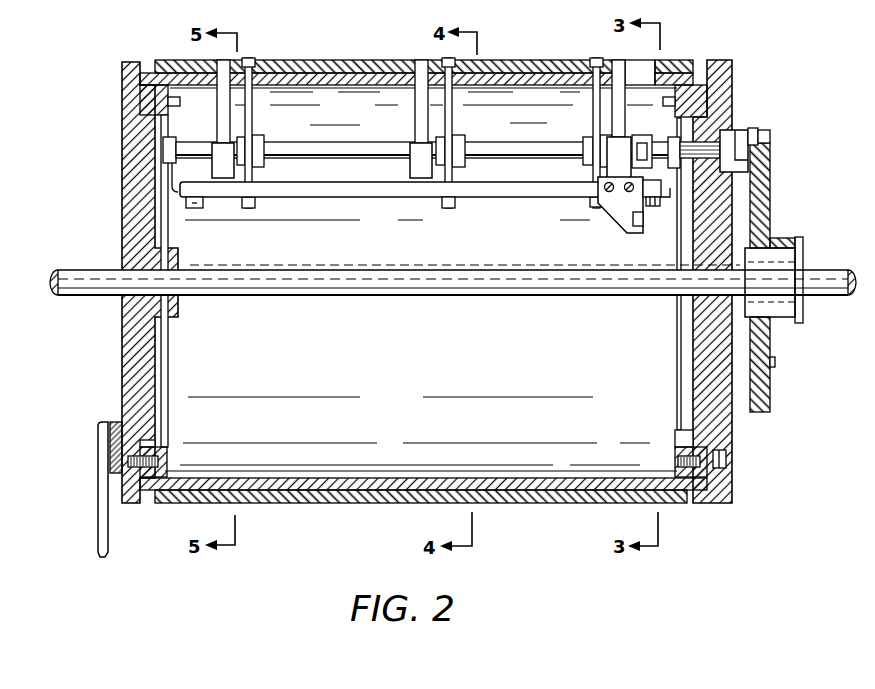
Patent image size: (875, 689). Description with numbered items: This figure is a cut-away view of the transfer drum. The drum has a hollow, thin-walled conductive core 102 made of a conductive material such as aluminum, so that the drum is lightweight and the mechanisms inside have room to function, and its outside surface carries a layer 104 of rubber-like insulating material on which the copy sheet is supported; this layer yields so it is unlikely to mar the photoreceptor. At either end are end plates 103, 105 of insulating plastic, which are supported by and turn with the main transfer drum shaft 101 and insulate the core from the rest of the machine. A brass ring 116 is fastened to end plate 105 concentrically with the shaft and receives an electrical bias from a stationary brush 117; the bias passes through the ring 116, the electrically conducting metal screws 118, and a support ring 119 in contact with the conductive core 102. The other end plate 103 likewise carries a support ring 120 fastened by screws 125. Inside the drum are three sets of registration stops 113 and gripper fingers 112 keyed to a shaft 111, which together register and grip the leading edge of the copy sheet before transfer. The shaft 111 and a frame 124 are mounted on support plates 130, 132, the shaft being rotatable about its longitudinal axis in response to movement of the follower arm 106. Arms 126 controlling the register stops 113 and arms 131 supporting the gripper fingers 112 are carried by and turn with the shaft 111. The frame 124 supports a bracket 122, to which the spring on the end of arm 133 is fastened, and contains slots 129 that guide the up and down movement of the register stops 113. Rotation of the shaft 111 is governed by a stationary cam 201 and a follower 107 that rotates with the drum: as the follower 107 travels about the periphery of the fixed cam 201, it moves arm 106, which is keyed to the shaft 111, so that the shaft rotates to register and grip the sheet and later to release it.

The main transfer drum shaft 101 is at (813, 266).
The conductive core 102 is at (143, 62).
The end plate 103 is at (732, 424).
The layer of insulating material 104 is at (500, 62).
The end plate 105 is at (126, 79).
The follower arm 106 is at (742, 130).
The follower 107 is at (768, 127).
The shaft 111 is at (706, 147).
The gripper fingers 112 is at (220, 62).
The registration stops 113 is at (249, 60).
The ring 116 is at (115, 421).
The stationary brush 117 is at (97, 471).
The metal screws 118 is at (168, 461).
The support ring 119 is at (145, 445).
The support ring 120 is at (675, 470).
The bracket 122 is at (622, 223).
The frame 124 is at (517, 197).
The screws 125 is at (673, 447).
The arms 126 is at (262, 137).
The slots 129 is at (453, 204).
The support plate 130 is at (665, 204).
The arms 131 is at (214, 143).
The support plate 132 is at (173, 200).
The arm 133 is at (634, 135).
The stationary cam 201 is at (772, 188).